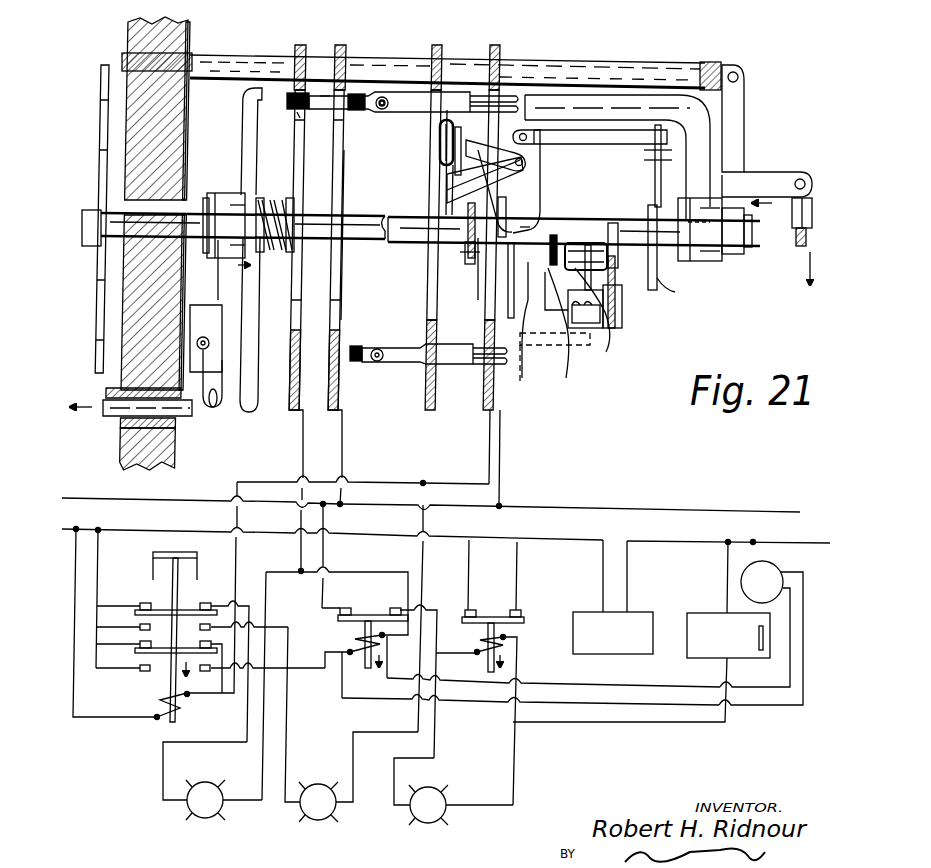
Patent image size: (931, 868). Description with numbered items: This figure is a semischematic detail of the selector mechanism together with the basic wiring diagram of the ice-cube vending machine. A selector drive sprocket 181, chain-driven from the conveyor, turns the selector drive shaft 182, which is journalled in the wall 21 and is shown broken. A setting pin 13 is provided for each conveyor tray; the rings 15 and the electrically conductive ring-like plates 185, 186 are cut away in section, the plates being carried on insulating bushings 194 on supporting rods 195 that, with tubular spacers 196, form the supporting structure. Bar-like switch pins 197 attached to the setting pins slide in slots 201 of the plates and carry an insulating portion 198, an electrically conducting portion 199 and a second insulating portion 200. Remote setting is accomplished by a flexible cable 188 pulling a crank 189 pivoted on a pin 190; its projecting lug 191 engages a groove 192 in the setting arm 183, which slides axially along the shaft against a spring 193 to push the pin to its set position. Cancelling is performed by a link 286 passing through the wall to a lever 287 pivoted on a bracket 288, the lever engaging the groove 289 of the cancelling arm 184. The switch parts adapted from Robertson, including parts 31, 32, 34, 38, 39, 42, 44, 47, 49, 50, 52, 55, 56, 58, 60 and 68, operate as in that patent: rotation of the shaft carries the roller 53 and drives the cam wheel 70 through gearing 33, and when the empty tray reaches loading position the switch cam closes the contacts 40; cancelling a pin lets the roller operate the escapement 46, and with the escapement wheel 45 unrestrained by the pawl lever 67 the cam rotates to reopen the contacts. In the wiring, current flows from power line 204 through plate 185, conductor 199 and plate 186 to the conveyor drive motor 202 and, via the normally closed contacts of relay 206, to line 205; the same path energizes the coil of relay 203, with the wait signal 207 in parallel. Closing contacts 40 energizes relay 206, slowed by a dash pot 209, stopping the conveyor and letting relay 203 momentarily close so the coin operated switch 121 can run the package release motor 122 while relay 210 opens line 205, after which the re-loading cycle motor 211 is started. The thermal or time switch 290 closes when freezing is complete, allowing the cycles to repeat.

The setting pin 13 is at (420, 110).
The rings 15 is at (432, 118).
The wall 21 is at (180, 452).
The selector switch part 31 is at (540, 236).
The selector switch part 32 is at (476, 275).
The gearing 33 is at (468, 264).
The selector switch part 34 is at (600, 328).
The selector switch part 38 is at (616, 268).
The selector switch part 39 is at (638, 242).
The contacts 40 is at (622, 312).
The selector switch part 42 is at (566, 244).
The selector switch part 44 is at (672, 280).
The escapement wheel 45 is at (568, 232).
The escapement 46 is at (652, 188).
The selector switch part 47 is at (446, 188).
The selector switch part 49 is at (530, 168).
The selector switch part 50 is at (468, 193).
The selector switch part 52 is at (471, 163).
The roller 53 is at (440, 150).
The selector switch part 55 is at (506, 212).
The selector switch part 56 is at (567, 168).
The selector switch part 58 is at (592, 142).
The selector switch part 60 is at (644, 158).
The pawl lever 67 is at (580, 399).
The selector switch part 68 is at (606, 354).
The cam wheel 70 is at (537, 408).
The coin operated switch 121 is at (713, 612).
The package release motor 122 is at (430, 823).
The selector drive sprocket 181 is at (101, 120).
The selector drive shaft 182 is at (90, 240).
The setting arm 183 is at (560, 93).
The cancelling arm 184 is at (243, 106).
The electrically conductive ring-like plate 185 is at (340, 395).
The electrically conductive ring-like plate 186 is at (330, 395).
The flexible cable 188 is at (800, 230).
The crank 189 is at (745, 140).
The pin 190 is at (748, 80).
The projecting lug 191 is at (738, 205).
The groove 192 is at (735, 261).
The spring 193 is at (260, 202).
The insulating bushings 194 is at (340, 48).
The supporting rods 195 is at (232, 62).
The tubular spacers 196 is at (392, 60).
The switch pin 197 is at (380, 112).
The insulating portion 198 is at (298, 115).
The electrically conducting portion 199 is at (318, 108).
The second insulating portion 200 is at (358, 110).
The slots 201 is at (296, 365).
The conveyor drive motor 202 is at (216, 818).
The relay 203 is at (372, 610).
The power line 204 is at (738, 510).
The power line 205 is at (795, 530).
The relay 206 is at (193, 608).
The wait signal 207 is at (782, 568).
The dash pot 209 is at (152, 570).
The relay 210 is at (489, 612).
The re-loading cycle motor 211 is at (321, 820).
The link 286 is at (107, 417).
The lever 287 is at (222, 376).
The bracket 288 is at (206, 328).
The groove 289 is at (220, 193).
The thermal or time switch 290 is at (592, 612).